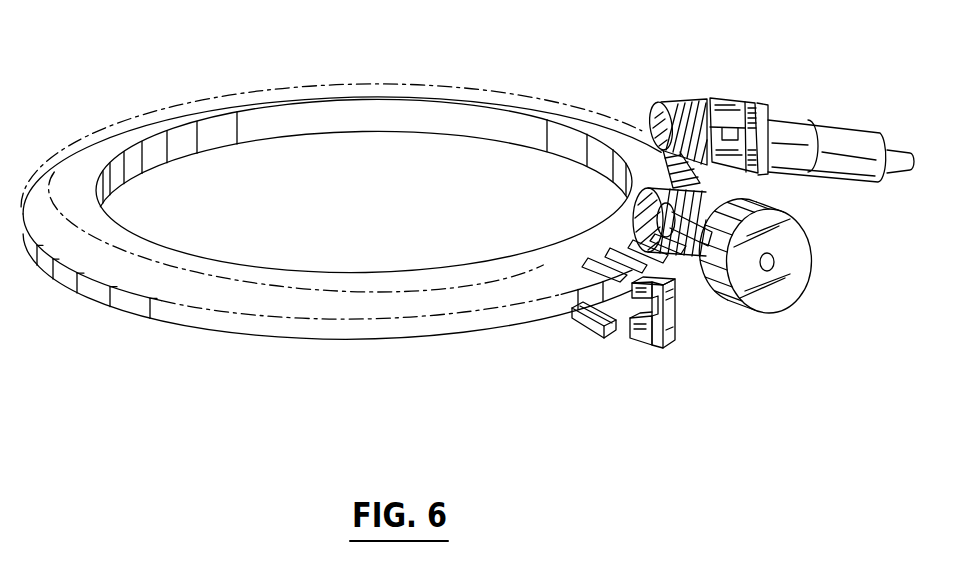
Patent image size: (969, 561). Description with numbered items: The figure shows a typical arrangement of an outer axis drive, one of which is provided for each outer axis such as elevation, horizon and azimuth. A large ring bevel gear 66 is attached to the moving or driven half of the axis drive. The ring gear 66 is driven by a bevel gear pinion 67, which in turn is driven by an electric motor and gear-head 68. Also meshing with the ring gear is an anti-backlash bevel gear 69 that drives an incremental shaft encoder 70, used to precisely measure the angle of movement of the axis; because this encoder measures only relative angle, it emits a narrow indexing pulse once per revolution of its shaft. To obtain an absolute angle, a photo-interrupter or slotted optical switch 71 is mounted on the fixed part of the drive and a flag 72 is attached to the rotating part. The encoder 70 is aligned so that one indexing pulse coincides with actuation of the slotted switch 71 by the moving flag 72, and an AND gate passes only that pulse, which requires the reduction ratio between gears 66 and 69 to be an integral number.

The ring bevel gear 66 is at (561, 107).
The bevel gear pinion 67 is at (675, 96).
The electric motor and gear-head 68 is at (787, 135).
The anti-backlash bevel gear 69 is at (632, 203).
The incremental shaft encoder 70 is at (775, 297).
The slotted optical switch 71 is at (670, 318).
The flag 72 is at (590, 328).